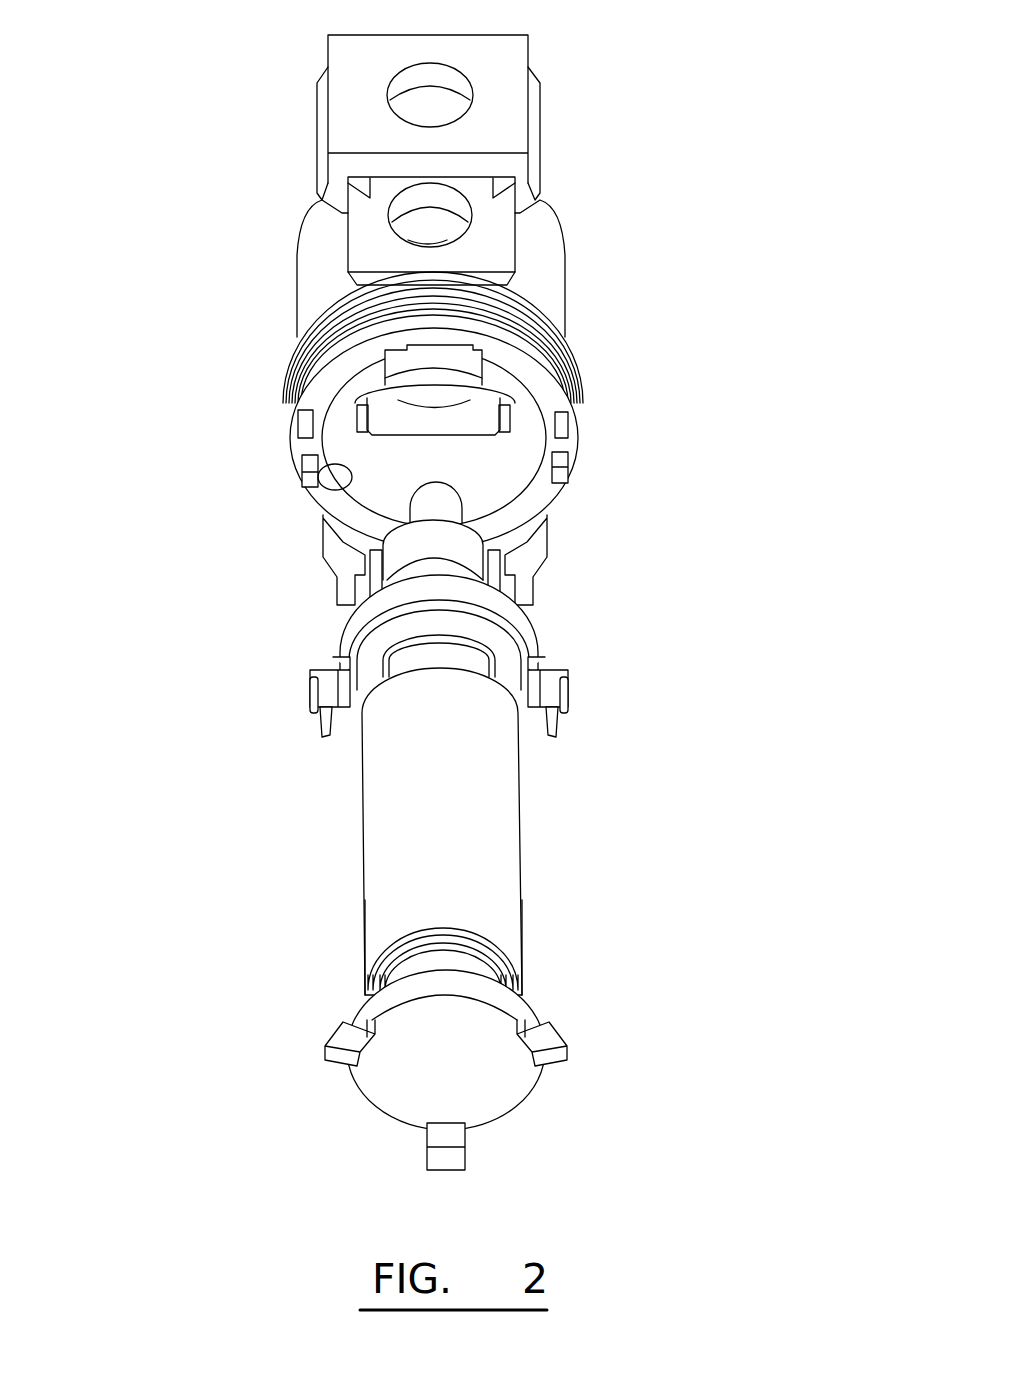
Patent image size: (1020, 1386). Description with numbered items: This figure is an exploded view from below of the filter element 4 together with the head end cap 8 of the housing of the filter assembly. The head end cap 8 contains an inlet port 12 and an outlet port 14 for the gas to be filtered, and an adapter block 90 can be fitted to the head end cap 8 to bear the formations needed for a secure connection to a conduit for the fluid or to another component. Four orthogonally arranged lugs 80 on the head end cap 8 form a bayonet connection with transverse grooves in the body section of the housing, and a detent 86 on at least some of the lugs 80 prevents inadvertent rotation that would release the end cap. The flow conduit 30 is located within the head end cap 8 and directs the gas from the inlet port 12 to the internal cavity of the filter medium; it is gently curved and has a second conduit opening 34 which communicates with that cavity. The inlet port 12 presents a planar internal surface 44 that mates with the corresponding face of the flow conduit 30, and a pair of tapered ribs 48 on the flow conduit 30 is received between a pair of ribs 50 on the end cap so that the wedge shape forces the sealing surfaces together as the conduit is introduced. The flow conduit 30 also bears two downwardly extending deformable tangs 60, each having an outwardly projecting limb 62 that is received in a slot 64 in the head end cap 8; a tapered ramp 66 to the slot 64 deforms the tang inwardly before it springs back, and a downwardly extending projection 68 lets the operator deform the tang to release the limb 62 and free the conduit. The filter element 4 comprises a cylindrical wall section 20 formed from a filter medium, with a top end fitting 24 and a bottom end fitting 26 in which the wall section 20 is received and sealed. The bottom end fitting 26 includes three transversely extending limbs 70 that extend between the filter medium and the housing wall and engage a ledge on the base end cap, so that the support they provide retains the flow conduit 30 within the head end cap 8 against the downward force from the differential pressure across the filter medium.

The adapter block 90 is at (502, 97).
The outlet port 14 is at (447, 227).
The head end cap 8 is at (553, 277).
The detent 86 is at (443, 328).
The ribs 50 is at (500, 424).
The lugs 80 is at (405, 360).
The planar internal surface 44 is at (393, 415).
The inlet port 12 is at (437, 400).
The slot 64 is at (293, 442).
The tapered ramp 66 is at (340, 480).
The ribs 48 is at (373, 570).
The flow conduit 30 is at (460, 552).
The top end fitting 24 is at (355, 622).
The second conduit opening 34 is at (460, 663).
The deformable tangs 60 is at (566, 720).
The outwardly projecting limb 62 is at (310, 692).
The downwardly extending projection 68 is at (320, 740).
The cylindrical wall section 20 is at (453, 802).
The filter element 4 is at (520, 864).
The bottom end fitting 26 is at (487, 1108).
The transversely extending limbs 70 is at (547, 1042).